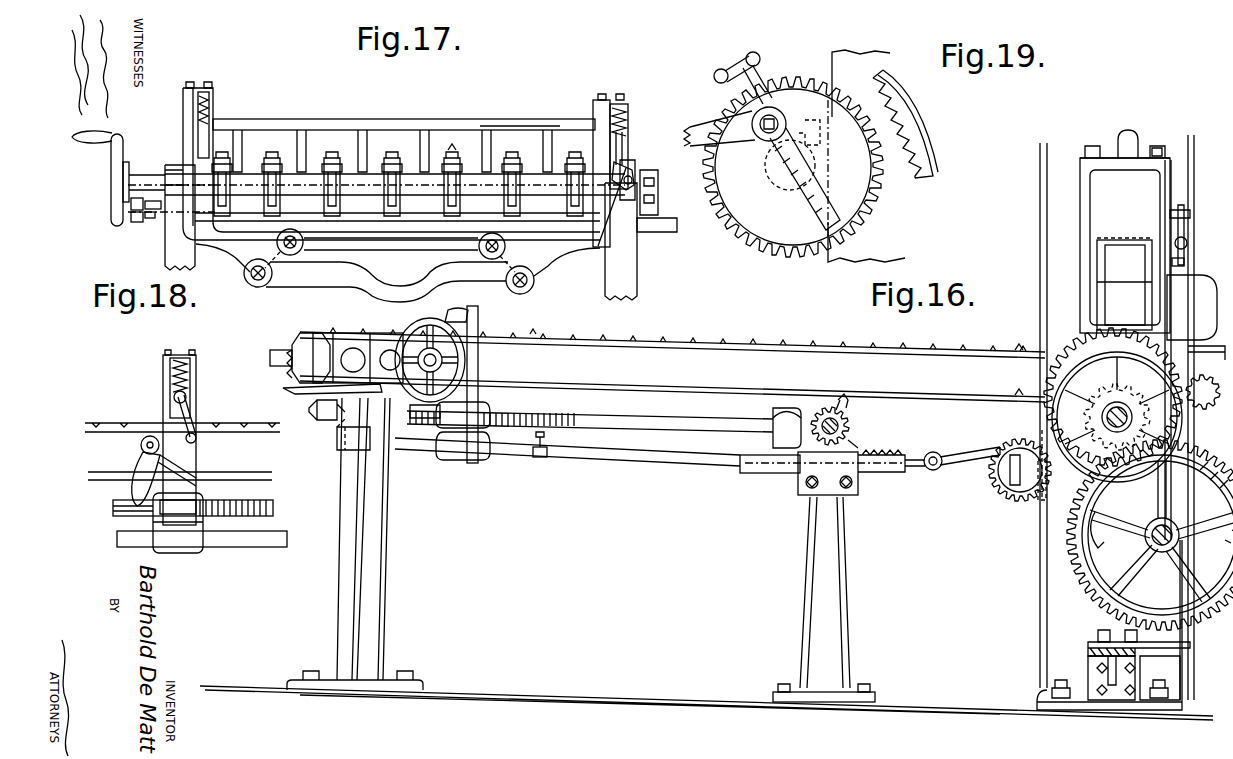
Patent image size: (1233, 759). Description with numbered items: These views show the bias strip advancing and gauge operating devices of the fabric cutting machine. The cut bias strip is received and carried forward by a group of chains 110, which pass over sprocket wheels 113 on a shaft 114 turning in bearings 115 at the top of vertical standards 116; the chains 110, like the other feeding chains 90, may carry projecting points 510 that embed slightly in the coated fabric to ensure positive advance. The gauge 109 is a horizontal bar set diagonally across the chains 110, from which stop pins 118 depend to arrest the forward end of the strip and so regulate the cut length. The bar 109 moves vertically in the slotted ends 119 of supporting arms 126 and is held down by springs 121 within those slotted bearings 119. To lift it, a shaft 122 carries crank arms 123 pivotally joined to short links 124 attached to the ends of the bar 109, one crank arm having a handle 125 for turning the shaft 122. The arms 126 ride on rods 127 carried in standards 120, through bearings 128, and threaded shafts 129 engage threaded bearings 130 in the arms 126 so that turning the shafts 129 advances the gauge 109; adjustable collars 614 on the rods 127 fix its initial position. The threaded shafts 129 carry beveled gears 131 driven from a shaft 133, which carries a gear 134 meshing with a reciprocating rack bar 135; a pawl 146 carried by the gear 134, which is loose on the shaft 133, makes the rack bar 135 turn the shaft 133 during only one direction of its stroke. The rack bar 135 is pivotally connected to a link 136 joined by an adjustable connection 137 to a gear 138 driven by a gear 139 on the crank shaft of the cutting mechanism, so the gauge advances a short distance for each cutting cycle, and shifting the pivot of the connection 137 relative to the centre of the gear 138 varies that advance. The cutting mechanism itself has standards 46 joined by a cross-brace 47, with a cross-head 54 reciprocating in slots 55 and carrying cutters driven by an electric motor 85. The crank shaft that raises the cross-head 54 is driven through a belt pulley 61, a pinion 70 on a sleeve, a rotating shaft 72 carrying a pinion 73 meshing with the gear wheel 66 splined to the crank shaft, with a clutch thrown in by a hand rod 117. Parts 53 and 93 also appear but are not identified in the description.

In FIG. 16, the standards 46 is at (1080, 240).
In FIG. 16, the cross-brace 47 is at (1135, 158).
In FIG. 16, the pinion 53 is at (1100, 416).
In FIG. 16, the cross-head 54 is at (1124, 295).
In FIG. 16, the slots 55 is at (1124, 284).
In FIG. 16, the belt pulley 61 is at (1045, 505).
In FIG. 16, the gear wheel 66 is at (1076, 342).
In FIG. 16, the pinion 70 is at (1138, 390).
In FIG. 16, the rotating shaft 72 is at (1160, 552).
In FIG. 16, the pinion 73 is at (1190, 552).
In FIG. 16, the electric motor 85 is at (1192, 272).
In FIG. 16, the chains 90 is at (1210, 343).
In FIG. 16, the small gear 93 is at (1206, 385).
In FIG. 17, the gauge 109 is at (497, 128).
In FIG. 16, the gauge 109 is at (486, 363).
In FIG. 17, the chains 110 is at (326, 172).
In FIG. 18, the chains 110 is at (108, 424).
In FIG. 16, the chains 110 is at (735, 346).
In FIG. 17, the sprocket wheels 113 is at (448, 200).
In FIG. 16, the sprocket wheels 113 is at (330, 340).
In FIG. 17, the shaft 114 is at (548, 198).
In FIG. 16, the shaft 114 is at (270, 356).
In FIG. 17, the bearings 115 is at (185, 166).
In FIG. 16, the bearings 115 is at (374, 344).
In FIG. 17, the vertical standards 116 is at (165, 256).
In FIG. 16, the vertical standards 116 is at (382, 530).
In FIG. 16, the hand rod 117 is at (1216, 463).
In FIG. 17, the stop pins 118 is at (404, 132).
In FIG. 17, the slotted ends 119 is at (183, 136).
In FIG. 18, the slotted ends 119 is at (163, 384).
In FIG. 16, the slotted ends 119 is at (479, 332).
In FIG. 17, the standards 120 is at (387, 278).
In FIG. 17, the springs 121 is at (214, 108).
In FIG. 18, the springs 121 is at (185, 368).
In FIG. 17, the shaft 122 is at (634, 172).
In FIG. 18, the shaft 122 is at (141, 447).
In FIG. 17, the crank arms 123 is at (605, 250).
In FIG. 18, the crank arms 123 is at (172, 452).
In FIG. 17, the short links 124 is at (630, 142).
In FIG. 18, the short links 124 is at (197, 424).
In FIG. 18, the handle 125 is at (130, 490).
In FIG. 17, the arms 126 is at (232, 248).
In FIG. 17, the rods 127 is at (252, 286).
In FIG. 18, the rods 127 is at (258, 548).
In FIG. 16, the rods 127 is at (572, 460).
In FIG. 17, the bearings 128 is at (270, 286).
In FIG. 18, the bearings 128 is at (186, 556).
In FIG. 16, the bearings 128 is at (465, 462).
In FIG. 17, the threaded shafts 129 is at (340, 250).
In FIG. 18, the threaded shafts 129 is at (298, 489).
In FIG. 16, the threaded shafts 129 is at (655, 418).
In FIG. 17, the threaded bearings 130 is at (304, 240).
In FIG. 18, the threaded bearings 130 is at (204, 500).
In FIG. 16, the threaded bearings 130 is at (480, 408).
In FIG. 16, the beveled gears 131 is at (787, 406).
In FIG. 16, the shaft 133 is at (852, 440).
In FIG. 16, the gear 134 is at (850, 420).
In FIG. 16, the reciprocating rack bar 135 is at (914, 474).
In FIG. 19, the link 136 is at (745, 135).
In FIG. 16, the link 136 is at (972, 450).
In FIG. 19, the adjustable connection 137 is at (772, 112).
In FIG. 16, the adjustable connection 137 is at (780, 478).
In FIG. 19, the gear 138 is at (748, 244).
In FIG. 16, the gear 138 is at (995, 482).
In FIG. 19, the gear 139 is at (932, 146).
In FIG. 16, the pawl 146 is at (836, 400).
In FIG. 17, the projecting points 510 is at (452, 150).
In FIG. 16, the projecting points 510 is at (538, 334).
In FIG. 16, the adjustable collars 614 is at (536, 462).